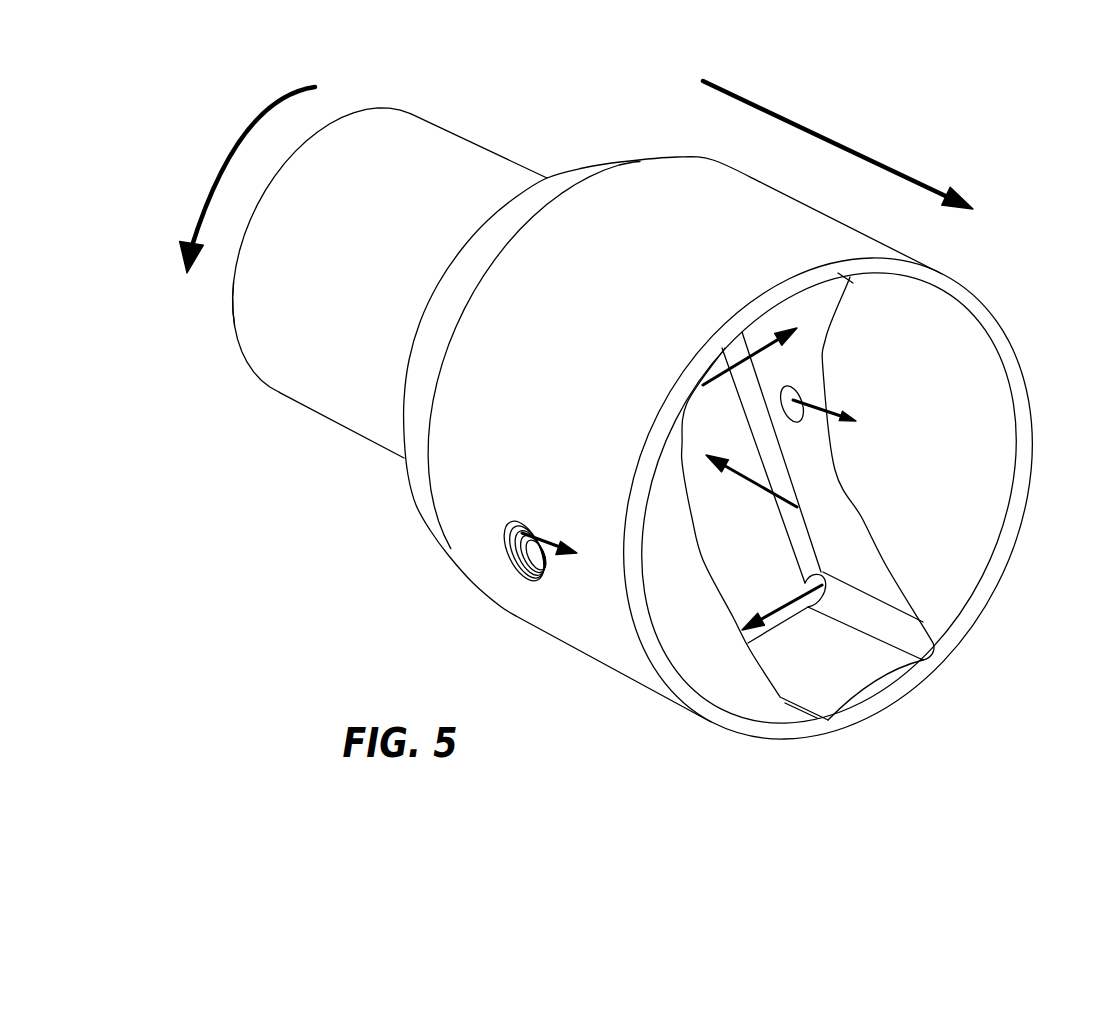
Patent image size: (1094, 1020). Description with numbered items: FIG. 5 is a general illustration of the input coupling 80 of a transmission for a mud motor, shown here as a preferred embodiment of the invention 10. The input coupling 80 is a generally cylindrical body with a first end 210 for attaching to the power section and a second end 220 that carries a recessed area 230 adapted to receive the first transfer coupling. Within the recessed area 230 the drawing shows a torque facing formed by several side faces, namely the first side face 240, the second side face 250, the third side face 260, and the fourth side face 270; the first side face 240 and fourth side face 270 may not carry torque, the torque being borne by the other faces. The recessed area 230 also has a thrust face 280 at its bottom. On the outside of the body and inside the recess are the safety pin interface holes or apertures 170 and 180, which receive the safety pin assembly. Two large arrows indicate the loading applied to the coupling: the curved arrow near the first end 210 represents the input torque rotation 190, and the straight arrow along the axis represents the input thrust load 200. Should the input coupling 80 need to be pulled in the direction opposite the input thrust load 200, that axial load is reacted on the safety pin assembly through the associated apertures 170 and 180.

The socket 10 is at (1032, 152).
The input coupling 80 is at (293, 378).
The safety pin interface hole 170 is at (530, 582).
The safety pin interface hole 180 is at (802, 423).
The input torque rotation 190 is at (210, 177).
The input thrust load 200 is at (847, 147).
The first end 210 is at (233, 258).
The second end 220 is at (950, 644).
The recessed area 230 is at (725, 680).
The first side face 240 is at (835, 680).
The second side face 250 is at (790, 590).
The third side face 260 is at (763, 348).
The fourth side face 270 is at (720, 357).
The thrust face 280 is at (713, 515).